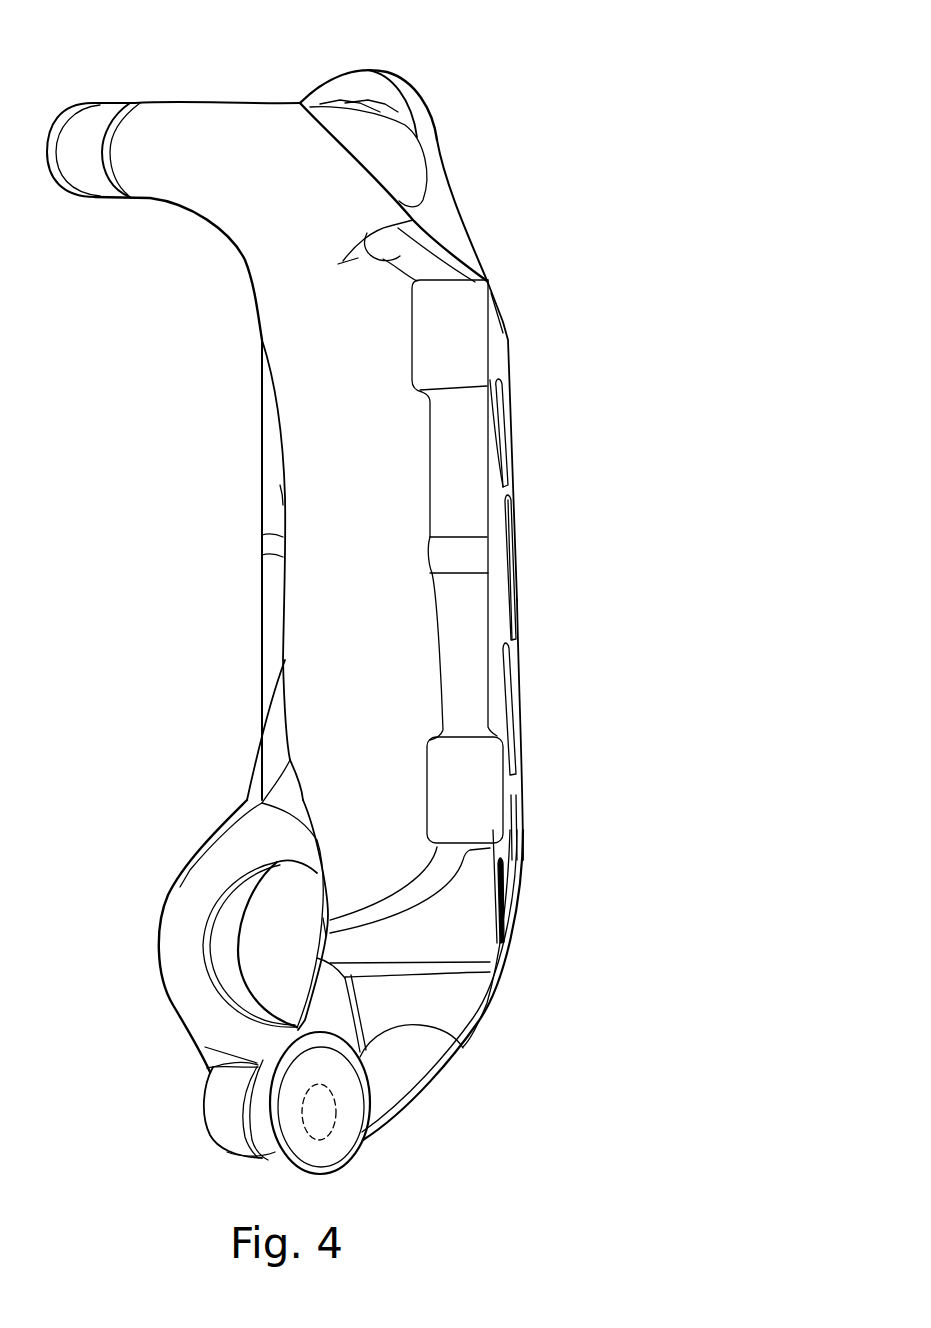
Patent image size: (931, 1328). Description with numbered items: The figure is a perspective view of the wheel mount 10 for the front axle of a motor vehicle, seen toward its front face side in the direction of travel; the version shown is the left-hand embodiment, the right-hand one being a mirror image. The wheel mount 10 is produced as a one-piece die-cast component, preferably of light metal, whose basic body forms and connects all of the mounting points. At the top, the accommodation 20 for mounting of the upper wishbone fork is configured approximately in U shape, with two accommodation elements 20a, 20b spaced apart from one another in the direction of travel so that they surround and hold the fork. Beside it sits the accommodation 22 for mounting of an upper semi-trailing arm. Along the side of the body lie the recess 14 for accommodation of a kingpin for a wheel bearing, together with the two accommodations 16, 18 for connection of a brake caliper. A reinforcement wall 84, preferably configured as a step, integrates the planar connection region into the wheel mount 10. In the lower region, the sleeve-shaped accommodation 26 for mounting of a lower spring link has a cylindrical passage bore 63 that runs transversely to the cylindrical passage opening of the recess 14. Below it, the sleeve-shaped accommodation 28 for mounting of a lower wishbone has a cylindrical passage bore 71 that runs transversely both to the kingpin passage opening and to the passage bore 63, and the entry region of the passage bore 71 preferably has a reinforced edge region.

The wheel mount 10 is at (538, 78).
The recess 14 is at (517, 560).
The accommodation for connection of a brake caliper 16 is at (491, 338).
The accommodation for connection of a brake caliper 18 is at (513, 791).
The accommodation for mounting of an upper wishbone fork 20 is at (113, 206).
The accommodation element 20a is at (192, 178).
The accommodation element 20b is at (85, 137).
The accommodation for mounting of an upper semi-trailing arm 22 is at (417, 78).
The accommodation for mounting of a lower spring link 26 is at (229, 979).
The accommodation for mounting of a lower wishbone 28 is at (317, 1101).
The cylindrical passage bore 63 is at (299, 951).
The cylindrical passage bore 71 is at (303, 1110).
The reinforcement wall 84 is at (343, 574).